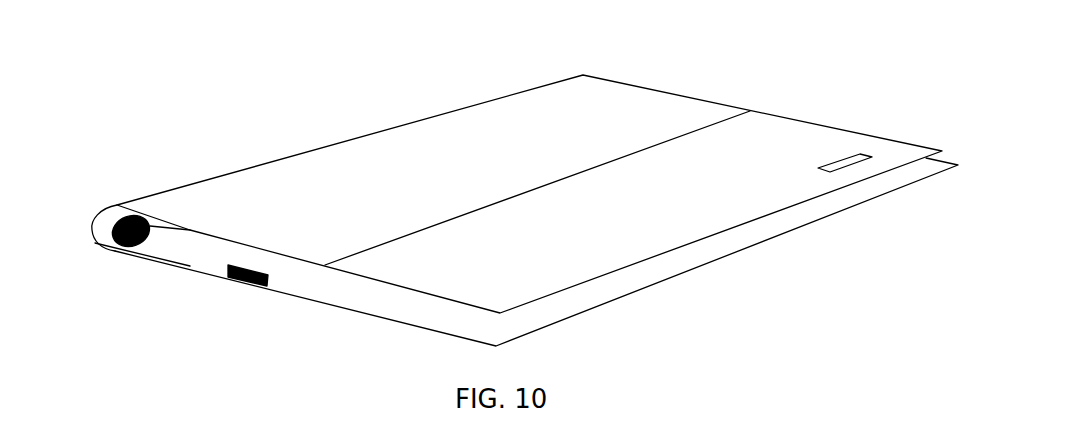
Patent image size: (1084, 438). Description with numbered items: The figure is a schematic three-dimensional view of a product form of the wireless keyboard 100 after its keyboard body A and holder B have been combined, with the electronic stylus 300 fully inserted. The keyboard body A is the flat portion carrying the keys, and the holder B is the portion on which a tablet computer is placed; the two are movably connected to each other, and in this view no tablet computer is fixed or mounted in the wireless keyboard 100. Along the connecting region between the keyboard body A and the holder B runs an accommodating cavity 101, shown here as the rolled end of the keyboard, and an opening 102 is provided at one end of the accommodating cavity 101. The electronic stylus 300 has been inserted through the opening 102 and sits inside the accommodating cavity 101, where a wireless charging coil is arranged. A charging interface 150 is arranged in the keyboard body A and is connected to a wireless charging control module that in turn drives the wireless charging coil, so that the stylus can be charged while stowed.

The wireless keyboard 100 is at (533, 88).
The accommodating cavity 101 is at (168, 236).
The opening 102 is at (132, 247).
The charging interface 150 is at (240, 283).
The electronic stylus 300 is at (112, 230).
The keyboard body A is at (658, 285).
The holder B is at (715, 107).